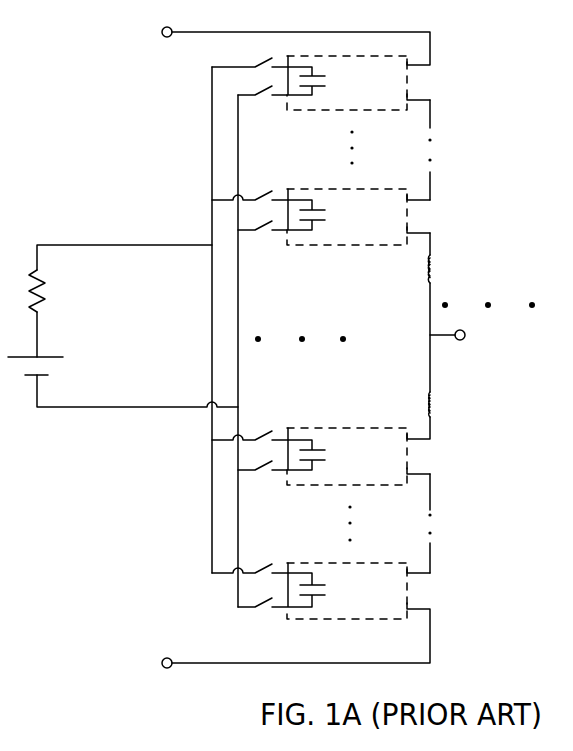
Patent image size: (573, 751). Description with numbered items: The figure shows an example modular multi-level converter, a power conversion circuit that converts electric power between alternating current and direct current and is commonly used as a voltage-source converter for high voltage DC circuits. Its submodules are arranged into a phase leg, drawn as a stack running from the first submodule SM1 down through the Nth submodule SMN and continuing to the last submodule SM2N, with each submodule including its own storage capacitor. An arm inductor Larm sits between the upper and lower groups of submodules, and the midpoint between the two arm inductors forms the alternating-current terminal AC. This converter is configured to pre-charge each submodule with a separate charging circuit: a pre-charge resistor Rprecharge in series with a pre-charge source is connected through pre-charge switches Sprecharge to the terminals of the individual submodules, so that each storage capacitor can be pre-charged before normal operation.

The first submodule SM1 is at (351, 83).
The N-th submodule SMN is at (351, 217).
The 2N-th submodule SM2N is at (351, 591).
The arm inductor Larm is at (398, 338).
The AC terminal AC is at (473, 336).
The precharge resistor Rprecharge is at (92, 291).
The precharge switches Sprecharge is at (276, 332).